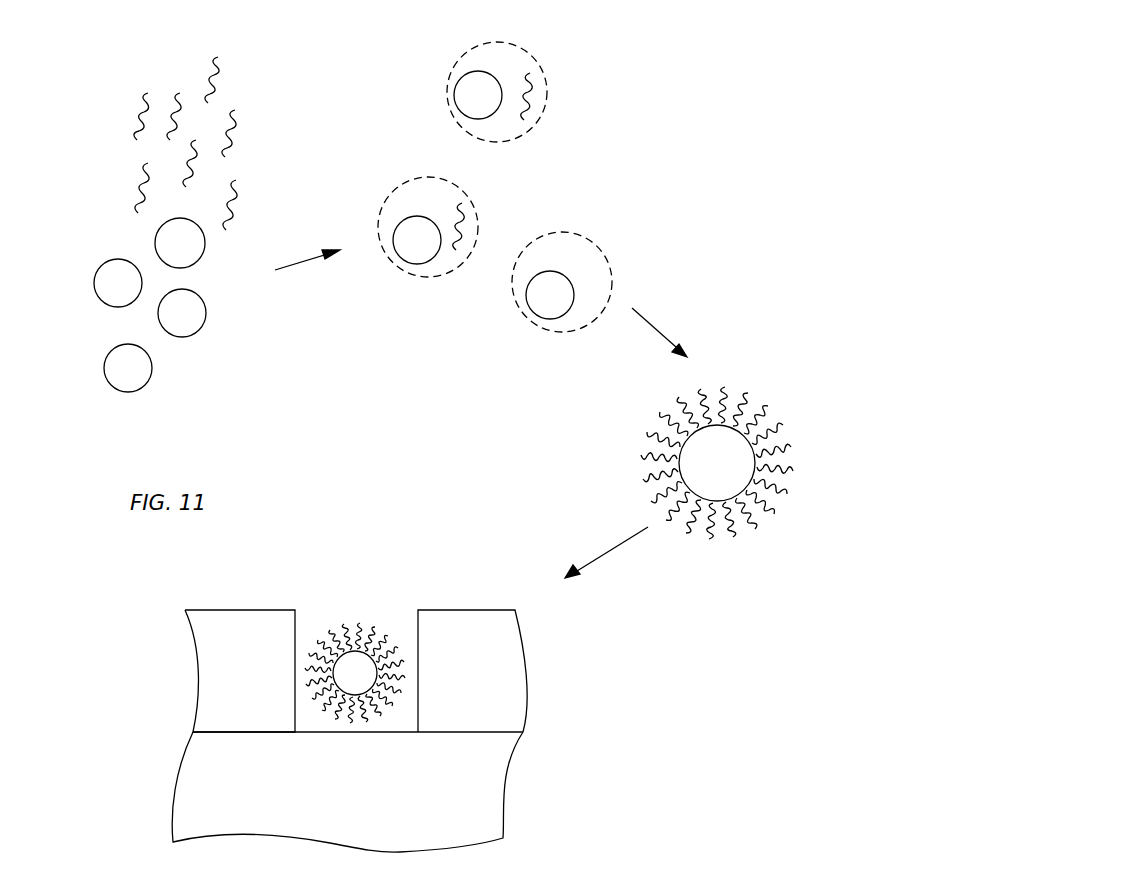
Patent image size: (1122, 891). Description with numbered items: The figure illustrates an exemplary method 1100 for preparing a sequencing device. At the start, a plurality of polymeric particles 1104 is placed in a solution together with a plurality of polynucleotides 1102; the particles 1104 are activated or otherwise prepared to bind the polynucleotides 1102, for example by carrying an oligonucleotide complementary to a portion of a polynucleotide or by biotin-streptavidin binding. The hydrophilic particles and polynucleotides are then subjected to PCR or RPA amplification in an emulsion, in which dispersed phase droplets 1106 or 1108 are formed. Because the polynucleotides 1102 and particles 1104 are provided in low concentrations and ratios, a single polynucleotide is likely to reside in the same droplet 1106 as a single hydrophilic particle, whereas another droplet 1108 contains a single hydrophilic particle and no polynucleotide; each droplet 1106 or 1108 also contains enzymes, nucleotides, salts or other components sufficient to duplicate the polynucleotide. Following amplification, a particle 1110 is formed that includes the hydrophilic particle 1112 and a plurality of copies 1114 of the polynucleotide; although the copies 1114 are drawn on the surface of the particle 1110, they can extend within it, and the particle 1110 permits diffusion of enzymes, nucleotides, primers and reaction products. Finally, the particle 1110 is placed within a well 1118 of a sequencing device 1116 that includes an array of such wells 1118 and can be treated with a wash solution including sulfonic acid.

The method for preparing a sequencing device 1100 is at (737, 74).
The polynucleotides 1102 is at (137, 103).
The polymeric particles 1104 is at (208, 347).
The dispersed phase droplet 1106 is at (542, 70).
The dispersed phase droplet 1108 is at (610, 262).
The particle 1110 is at (568, 530).
The hydrophilic particle 1112 is at (725, 457).
The copies of the polynucleotide 1114 is at (642, 462).
The sequencing device 1116 is at (528, 720).
The well 1118 is at (398, 613).